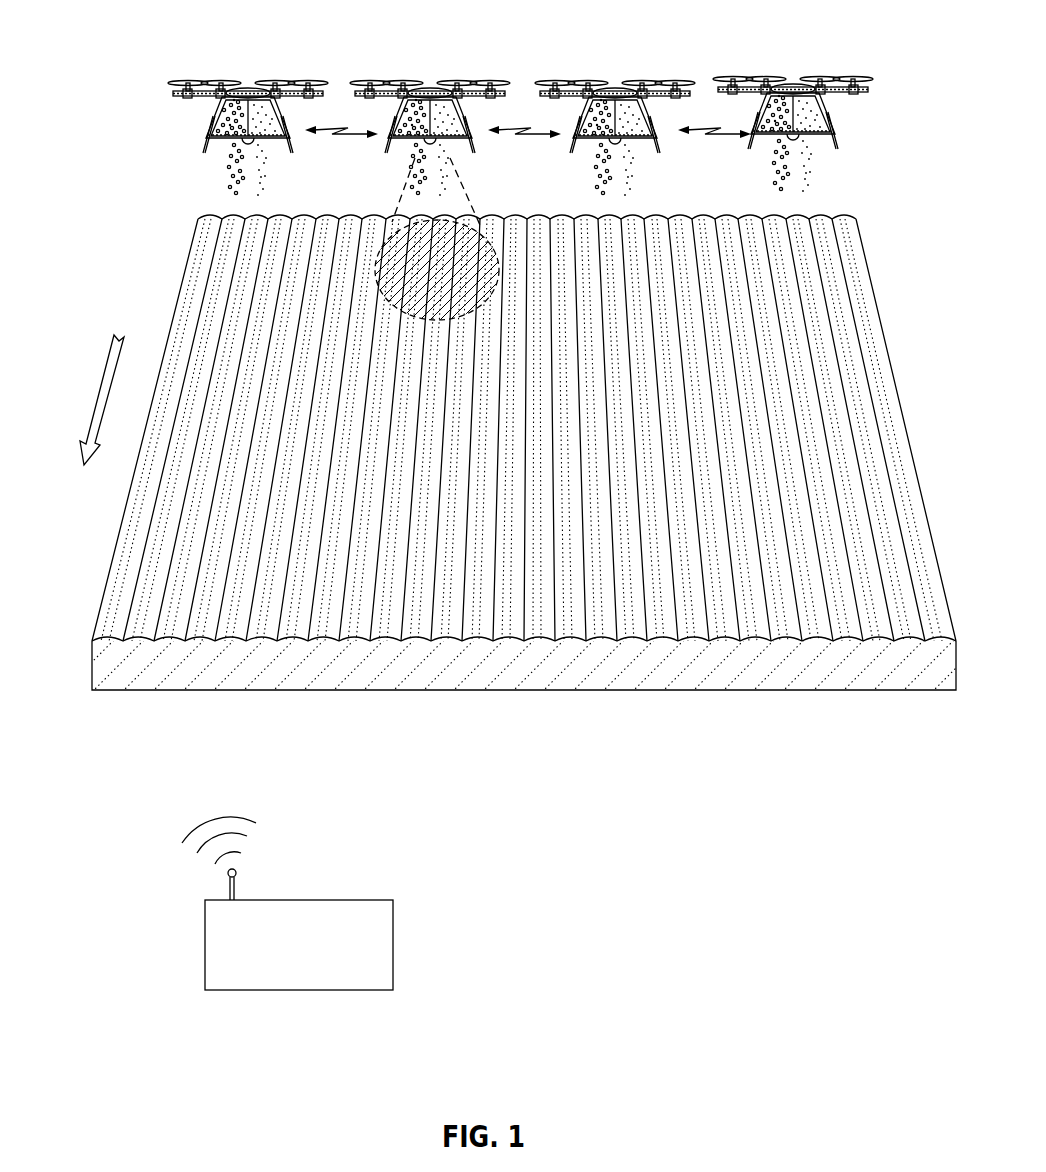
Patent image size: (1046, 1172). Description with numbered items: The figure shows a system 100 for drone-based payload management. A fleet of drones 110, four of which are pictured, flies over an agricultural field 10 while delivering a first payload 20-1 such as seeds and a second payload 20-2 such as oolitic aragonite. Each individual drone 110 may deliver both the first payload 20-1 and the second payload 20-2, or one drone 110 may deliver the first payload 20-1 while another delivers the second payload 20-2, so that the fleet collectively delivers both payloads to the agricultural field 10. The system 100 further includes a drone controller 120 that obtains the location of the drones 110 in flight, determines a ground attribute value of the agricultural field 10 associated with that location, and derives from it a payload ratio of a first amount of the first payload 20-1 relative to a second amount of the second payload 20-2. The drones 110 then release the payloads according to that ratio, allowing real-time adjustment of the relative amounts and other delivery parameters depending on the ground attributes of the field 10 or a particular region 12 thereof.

The system for drone-based payload management 100 is at (258, 28).
The drone 110 is at (430, 90).
The first payload 20-1 is at (420, 162).
The second payload 20-2 is at (452, 162).
The region 12 is at (500, 262).
The agricultural field 10 is at (806, 259).
The drone controller 120 is at (338, 900).